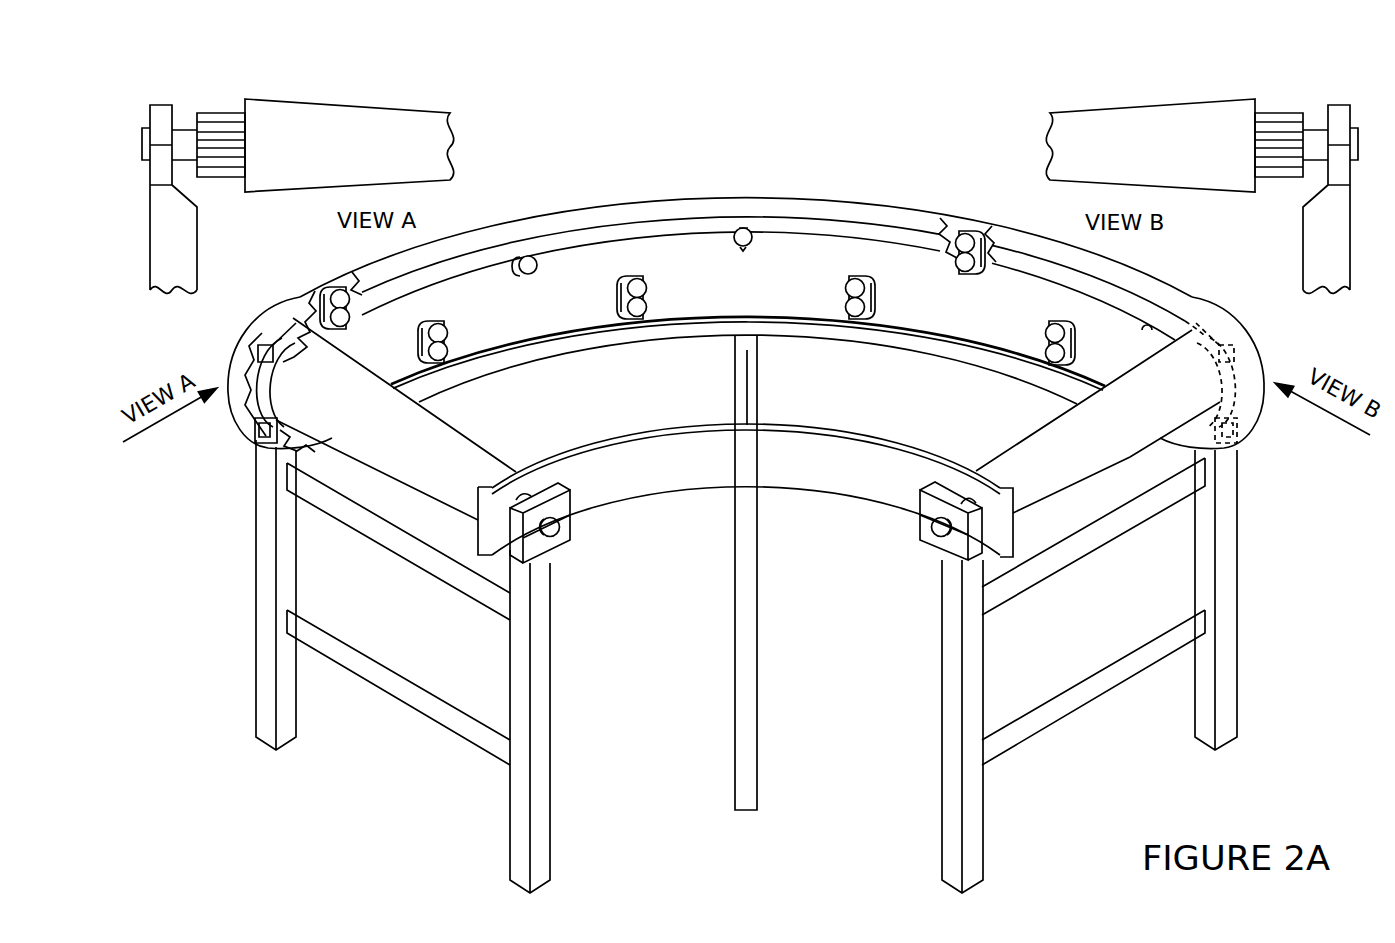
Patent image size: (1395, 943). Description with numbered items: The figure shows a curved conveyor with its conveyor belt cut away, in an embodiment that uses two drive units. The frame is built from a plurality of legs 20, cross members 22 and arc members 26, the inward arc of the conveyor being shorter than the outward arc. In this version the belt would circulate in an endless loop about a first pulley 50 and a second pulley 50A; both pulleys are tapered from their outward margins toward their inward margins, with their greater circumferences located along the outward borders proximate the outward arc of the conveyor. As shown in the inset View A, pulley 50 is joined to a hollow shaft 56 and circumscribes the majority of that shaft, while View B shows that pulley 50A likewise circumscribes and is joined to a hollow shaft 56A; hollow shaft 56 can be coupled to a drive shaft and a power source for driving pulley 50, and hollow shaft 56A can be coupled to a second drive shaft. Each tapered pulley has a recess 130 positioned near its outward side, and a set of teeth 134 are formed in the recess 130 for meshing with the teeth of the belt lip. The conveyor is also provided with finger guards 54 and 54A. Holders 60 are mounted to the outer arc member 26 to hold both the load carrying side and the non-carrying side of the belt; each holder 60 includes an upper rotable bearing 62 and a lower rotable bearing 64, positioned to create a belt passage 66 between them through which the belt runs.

The legs 20 is at (173, 243).
The cross members 22 is at (758, 388).
The arc members 26 is at (905, 460).
The pulley 50 is at (443, 448).
The second pulley 50A is at (1040, 448).
The finger guard 54 is at (253, 378).
The finger guard 54A is at (1217, 365).
The hollow shaft 56 is at (190, 143).
The hollow shaft 56A is at (1316, 143).
The holders 60 is at (736, 300).
The upper rotable bearing 62 is at (642, 287).
The lower rotable bearing 64 is at (643, 307).
The belt passage 66 is at (647, 297).
The recess 130 is at (235, 183).
The teeth 134 is at (208, 148).